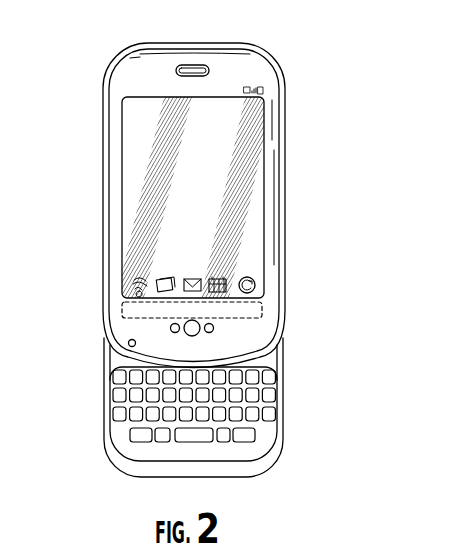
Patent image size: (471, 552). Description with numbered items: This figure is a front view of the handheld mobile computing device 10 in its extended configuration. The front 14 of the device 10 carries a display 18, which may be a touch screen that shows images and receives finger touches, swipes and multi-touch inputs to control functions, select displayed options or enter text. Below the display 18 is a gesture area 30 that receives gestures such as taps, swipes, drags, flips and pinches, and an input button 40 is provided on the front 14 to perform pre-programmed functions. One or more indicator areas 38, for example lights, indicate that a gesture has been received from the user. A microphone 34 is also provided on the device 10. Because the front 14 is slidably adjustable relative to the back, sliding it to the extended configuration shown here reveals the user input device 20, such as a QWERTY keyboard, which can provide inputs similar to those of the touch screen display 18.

The device 10 is at (219, 29).
The front 14 is at (238, 78).
The display 18 is at (254, 190).
The gesture area 30 is at (256, 313).
The input button 40 is at (183, 321).
The indicator area 38 is at (214, 328).
The microphone 34 is at (128, 345).
The user input device 20 is at (265, 394).